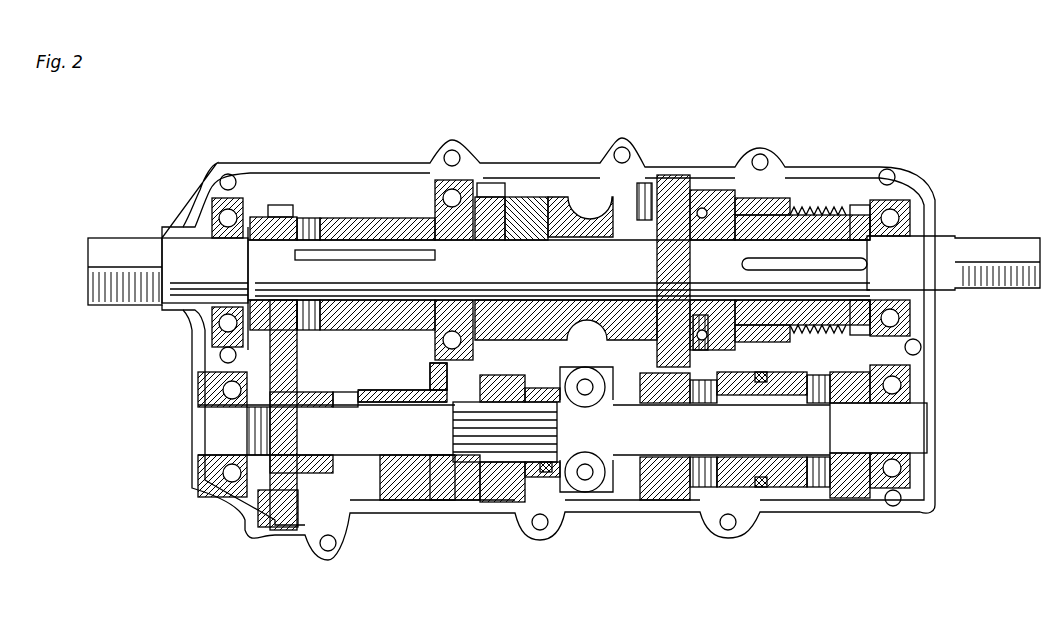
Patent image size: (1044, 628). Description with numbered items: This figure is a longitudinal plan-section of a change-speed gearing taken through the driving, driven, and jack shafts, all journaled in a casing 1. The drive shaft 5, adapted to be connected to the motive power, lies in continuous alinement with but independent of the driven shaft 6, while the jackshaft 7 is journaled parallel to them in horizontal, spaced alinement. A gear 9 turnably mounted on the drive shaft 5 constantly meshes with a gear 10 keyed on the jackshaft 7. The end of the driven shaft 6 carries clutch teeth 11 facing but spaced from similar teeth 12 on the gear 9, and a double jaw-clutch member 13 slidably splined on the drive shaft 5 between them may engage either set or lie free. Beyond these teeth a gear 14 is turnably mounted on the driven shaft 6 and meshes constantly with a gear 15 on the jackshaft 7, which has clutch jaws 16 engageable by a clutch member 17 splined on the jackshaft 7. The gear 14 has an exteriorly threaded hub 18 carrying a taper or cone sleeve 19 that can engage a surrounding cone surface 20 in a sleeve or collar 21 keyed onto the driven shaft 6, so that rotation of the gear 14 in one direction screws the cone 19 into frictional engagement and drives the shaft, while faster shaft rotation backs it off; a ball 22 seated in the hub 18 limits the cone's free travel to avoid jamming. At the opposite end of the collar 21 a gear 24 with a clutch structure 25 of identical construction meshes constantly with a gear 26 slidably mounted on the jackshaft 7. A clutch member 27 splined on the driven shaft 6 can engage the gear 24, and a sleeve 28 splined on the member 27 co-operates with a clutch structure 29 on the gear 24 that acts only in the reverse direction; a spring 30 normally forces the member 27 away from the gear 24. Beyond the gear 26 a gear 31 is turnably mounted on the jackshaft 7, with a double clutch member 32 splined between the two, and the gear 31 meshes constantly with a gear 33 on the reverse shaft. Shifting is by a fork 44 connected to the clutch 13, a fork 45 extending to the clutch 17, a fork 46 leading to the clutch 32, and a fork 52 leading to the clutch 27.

The gear housing 1 is at (190, 397).
The drive shaft 5 is at (128, 258).
The driven shaft 6 is at (928, 253).
The jackshaft 7 is at (905, 424).
The gear 9 is at (272, 205).
The gear 10 is at (285, 512).
The clutch teeth 11 is at (417, 218).
The clutch teeth 12 is at (317, 218).
The double jaw-clutch member 13 is at (355, 218).
The gear 14 is at (495, 183).
The gear 15 is at (492, 502).
The clutch teeth or jaws 16 is at (455, 472).
The clutch member 17 is at (540, 470).
The exteriorly threaded hub 18 is at (532, 240).
The taper or cone sleeve 19 is at (555, 200).
The cone surface 20 is at (520, 197).
The sleeve or collar 21 is at (582, 212).
The ball 22 is at (550, 340).
The gear 24 is at (668, 175).
The clutch structure 25 is at (635, 200).
The gear 26 is at (678, 500).
The clutch member 27 is at (855, 215).
The sleeve 28 is at (785, 203).
The clutch structure 29 is at (715, 195).
The spring 30 is at (833, 213).
The gear 31 is at (850, 497).
The double clutch member 32 is at (783, 487).
The gear 33 is at (922, 347).
The fork 44 is at (367, 323).
The fork 45 is at (548, 465).
The fork 46 is at (760, 487).
The fork 52 is at (893, 192).